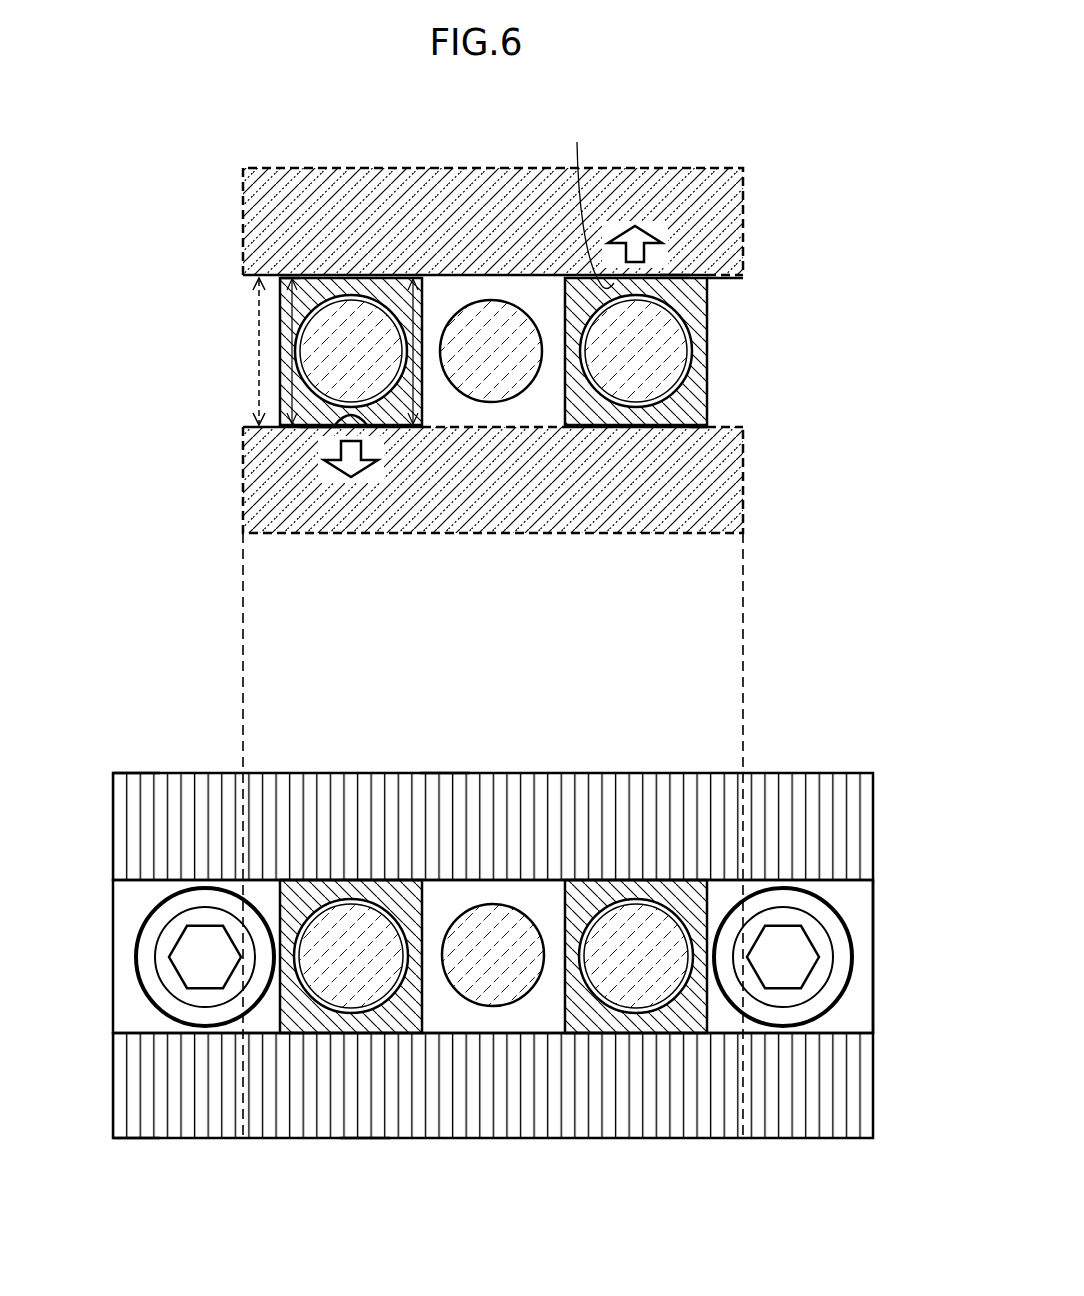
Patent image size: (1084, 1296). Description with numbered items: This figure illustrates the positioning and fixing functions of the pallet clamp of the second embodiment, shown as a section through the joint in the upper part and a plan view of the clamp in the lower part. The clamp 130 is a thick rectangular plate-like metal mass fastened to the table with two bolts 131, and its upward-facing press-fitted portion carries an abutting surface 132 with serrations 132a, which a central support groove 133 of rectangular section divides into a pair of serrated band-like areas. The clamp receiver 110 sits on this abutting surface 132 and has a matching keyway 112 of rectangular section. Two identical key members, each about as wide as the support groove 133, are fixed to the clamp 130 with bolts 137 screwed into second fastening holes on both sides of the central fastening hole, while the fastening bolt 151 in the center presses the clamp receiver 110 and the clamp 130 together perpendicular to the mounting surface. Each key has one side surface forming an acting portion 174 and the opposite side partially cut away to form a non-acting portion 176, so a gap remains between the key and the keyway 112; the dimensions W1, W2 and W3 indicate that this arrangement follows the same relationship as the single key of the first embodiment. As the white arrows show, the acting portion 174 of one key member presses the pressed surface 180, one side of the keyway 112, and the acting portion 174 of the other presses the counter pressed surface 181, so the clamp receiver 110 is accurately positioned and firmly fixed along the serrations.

The clamp receiver 110 is at (708, 162).
The keyway 112 is at (745, 280).
The clamp 130 is at (840, 762).
The bolts 131 is at (160, 962).
The abutting surface 132 is at (188, 800).
The serrations 132a is at (441, 800).
The support groove 133 is at (862, 908).
The bolts 137 is at (327, 368).
The fastening bolt 151 is at (467, 368).
The acting portion 174 is at (672, 275).
The non-acting portion 176 is at (300, 278).
The pressed surface 180 is at (372, 418).
The counter pressed surface 181 is at (581, 197).
The width W1 is at (292, 383).
The width W2 is at (240, 351).
The width W3 is at (413, 283).